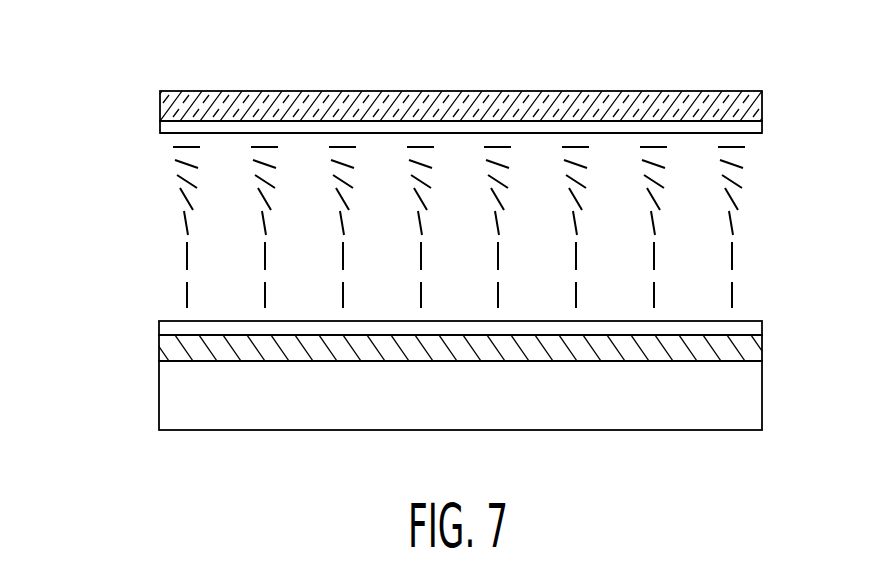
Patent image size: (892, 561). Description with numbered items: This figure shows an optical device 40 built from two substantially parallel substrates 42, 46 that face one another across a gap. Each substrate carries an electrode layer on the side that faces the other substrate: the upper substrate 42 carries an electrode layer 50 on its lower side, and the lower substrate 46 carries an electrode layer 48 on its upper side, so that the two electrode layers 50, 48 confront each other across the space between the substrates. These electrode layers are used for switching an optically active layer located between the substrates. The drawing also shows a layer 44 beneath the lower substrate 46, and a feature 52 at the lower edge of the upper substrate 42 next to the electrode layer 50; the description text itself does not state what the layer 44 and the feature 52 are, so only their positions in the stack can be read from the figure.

The optical device 40 is at (166, 231).
The substrate 42 is at (748, 91).
The substrate 44 is at (745, 397).
The substrate 46 is at (745, 346).
The electrode layer 48 is at (751, 328).
The electrode layer 50 is at (753, 128).
The lower surface 52 is at (165, 140).